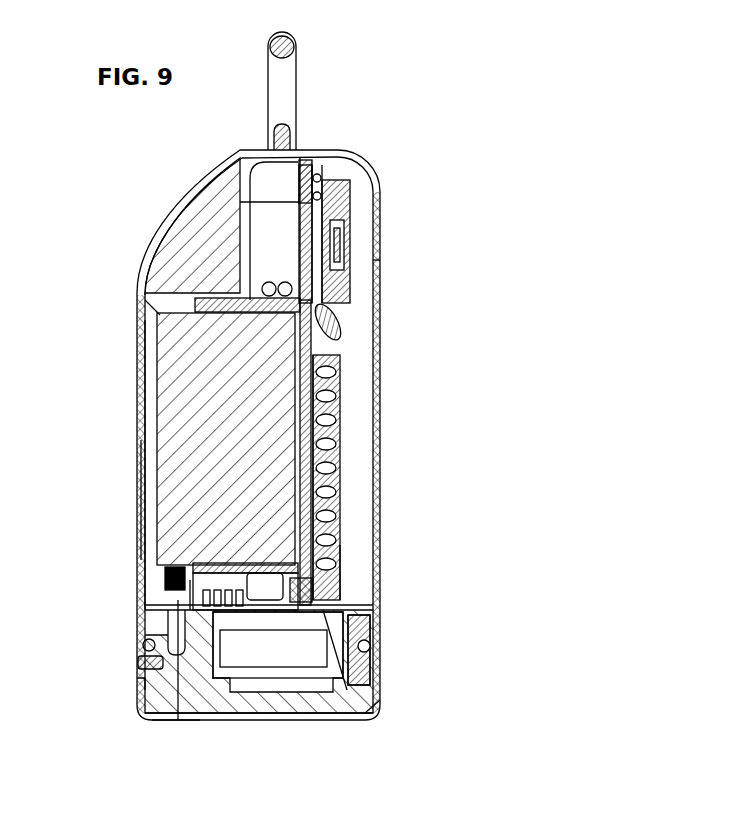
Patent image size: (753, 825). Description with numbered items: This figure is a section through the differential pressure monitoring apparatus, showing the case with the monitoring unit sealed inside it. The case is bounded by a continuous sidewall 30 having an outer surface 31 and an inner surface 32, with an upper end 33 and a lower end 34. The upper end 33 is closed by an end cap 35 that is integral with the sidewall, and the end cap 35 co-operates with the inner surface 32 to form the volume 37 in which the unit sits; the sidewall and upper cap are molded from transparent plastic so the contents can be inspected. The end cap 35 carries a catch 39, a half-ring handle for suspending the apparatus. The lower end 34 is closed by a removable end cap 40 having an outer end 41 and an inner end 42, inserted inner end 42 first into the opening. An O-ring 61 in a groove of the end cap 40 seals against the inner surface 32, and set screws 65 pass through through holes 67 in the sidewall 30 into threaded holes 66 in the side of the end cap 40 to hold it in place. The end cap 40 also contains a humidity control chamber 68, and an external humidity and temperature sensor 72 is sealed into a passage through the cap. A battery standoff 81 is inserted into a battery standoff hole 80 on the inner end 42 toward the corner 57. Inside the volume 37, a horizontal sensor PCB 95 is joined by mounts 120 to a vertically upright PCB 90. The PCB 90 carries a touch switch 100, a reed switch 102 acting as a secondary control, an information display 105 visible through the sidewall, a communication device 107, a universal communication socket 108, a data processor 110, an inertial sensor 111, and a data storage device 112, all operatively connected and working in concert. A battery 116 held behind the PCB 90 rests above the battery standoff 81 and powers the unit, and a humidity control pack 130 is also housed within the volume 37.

The continuous sidewall 30 is at (140, 378).
The outer surface 31 is at (140, 480).
The inner surface 32 is at (381, 240).
The upper end 33 is at (384, 283).
The lower end 34 is at (375, 700).
The end cap 35 is at (170, 212).
The volume 37 is at (148, 300).
The catch 39 is at (283, 75).
The end cap 40 is at (294, 700).
The outer end 41 is at (163, 718).
The inner end 42 is at (345, 606).
The corner 57 is at (140, 530).
The O-ring 61 is at (370, 646).
The set screws 65 is at (140, 665).
The threaded holes 66 is at (140, 690).
The through holes 67 is at (140, 655).
The humidity control chamber 68 is at (356, 655).
The external humidity and temperature sensor 72 is at (277, 600).
The battery standoff hole 80 is at (178, 720).
The battery standoff 81 is at (165, 587).
The PCB 90 is at (313, 410).
The sensor PCB 95 is at (330, 612).
The touch switch 100 is at (302, 158).
The reed switch 102 is at (343, 183).
The information display 105 is at (340, 395).
The communication device 107 is at (340, 203).
The universal communication socket 108 is at (345, 232).
The data processor 110 is at (340, 470).
The inertial sensor 111 is at (340, 562).
The data storage device 112 is at (340, 535).
The battery 116 is at (157, 418).
The mounts 120 is at (312, 585).
The humidity control pack 130 is at (225, 680).